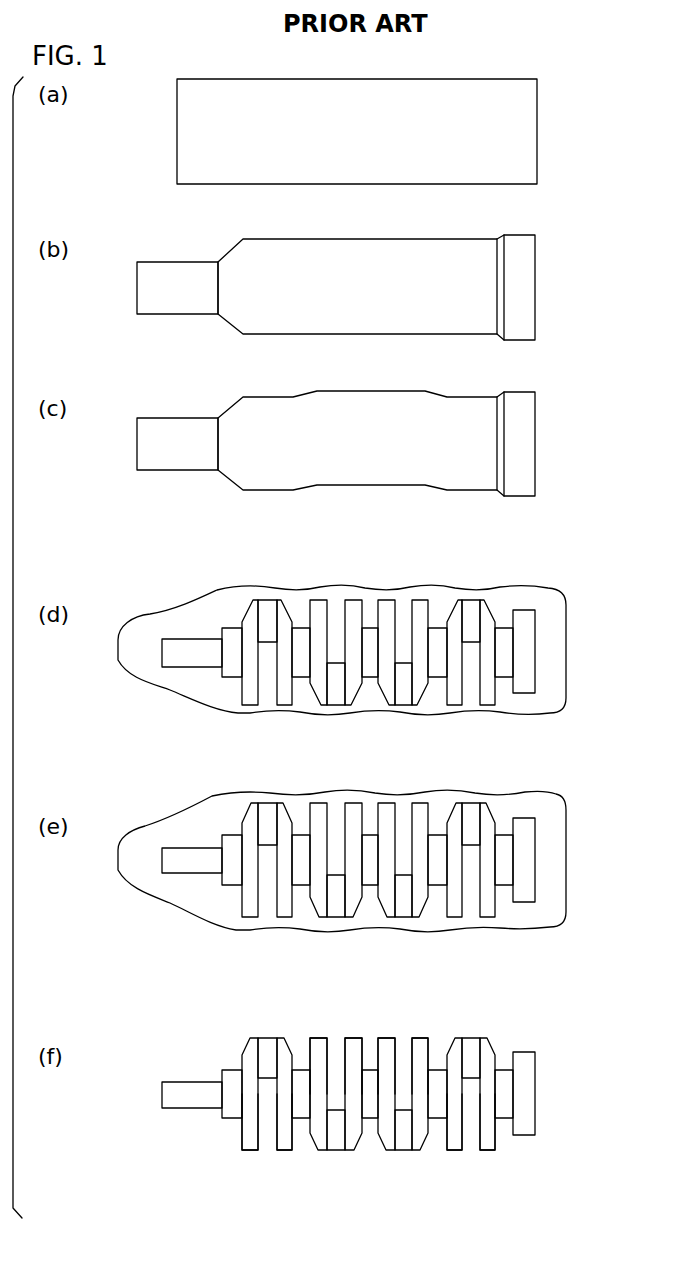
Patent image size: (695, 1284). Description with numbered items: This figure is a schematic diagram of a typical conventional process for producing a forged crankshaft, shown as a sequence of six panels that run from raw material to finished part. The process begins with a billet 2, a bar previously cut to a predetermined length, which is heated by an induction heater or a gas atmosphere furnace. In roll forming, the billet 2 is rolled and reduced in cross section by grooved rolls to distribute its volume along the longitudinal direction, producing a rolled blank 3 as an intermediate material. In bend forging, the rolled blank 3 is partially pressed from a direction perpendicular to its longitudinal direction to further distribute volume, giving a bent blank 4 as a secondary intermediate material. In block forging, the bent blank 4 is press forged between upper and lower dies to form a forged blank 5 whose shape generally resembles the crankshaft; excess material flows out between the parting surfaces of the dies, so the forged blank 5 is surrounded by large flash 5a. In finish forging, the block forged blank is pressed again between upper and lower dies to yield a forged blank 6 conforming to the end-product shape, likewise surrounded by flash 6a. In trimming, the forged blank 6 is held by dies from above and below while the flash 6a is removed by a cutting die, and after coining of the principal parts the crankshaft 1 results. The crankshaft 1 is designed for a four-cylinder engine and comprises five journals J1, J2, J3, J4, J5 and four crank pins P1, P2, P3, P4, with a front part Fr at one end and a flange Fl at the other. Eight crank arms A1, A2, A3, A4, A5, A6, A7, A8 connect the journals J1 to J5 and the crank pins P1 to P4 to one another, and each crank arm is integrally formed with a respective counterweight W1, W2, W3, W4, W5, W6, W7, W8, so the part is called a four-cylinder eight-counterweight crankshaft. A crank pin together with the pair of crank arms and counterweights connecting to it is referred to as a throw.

The crankshaft 1 is at (379, 1093).
The billet 2 is at (551, 102).
The rolled blank 3 is at (549, 260).
The bent blank 4 is at (548, 417).
The forged blank (block forged blank) 5 is at (373, 644).
The flash 5a is at (556, 688).
The forged blank (finish forged blank) 6 is at (373, 854).
The flash 6a is at (556, 893).
The front part Fr is at (185, 1082).
The flange Fl is at (527, 1052).
The journal J1 is at (232, 1070).
The journal J2 is at (302, 1070).
The journal J3 is at (370, 1070).
The journal J4 is at (440, 1070).
The journal J5 is at (503, 1070).
The crank pin P1 is at (268, 1040).
The crank pin P2 is at (340, 1152).
The crank pin P3 is at (407, 1152).
The crank pin P4 is at (472, 1040).
The crank arm A1 is at (245, 1042).
The crank arm A2 is at (288, 1042).
The crank arm A3 is at (315, 1148).
The crank arm A4 is at (358, 1148).
The crank arm A5 is at (382, 1148).
The crank arm A6 is at (425, 1148).
The crank arm A7 is at (448, 1042).
The crank arm A8 is at (492, 1042).
The counterweight W1 is at (247, 1147).
The counterweight W2 is at (280, 1147).
The counterweight W3 is at (315, 1040).
The counterweight W4 is at (350, 1040).
The counterweight W5 is at (383, 1040).
The counterweight W6 is at (418, 1040).
The counterweight W7 is at (452, 1147).
The counterweight W8 is at (483, 1147).